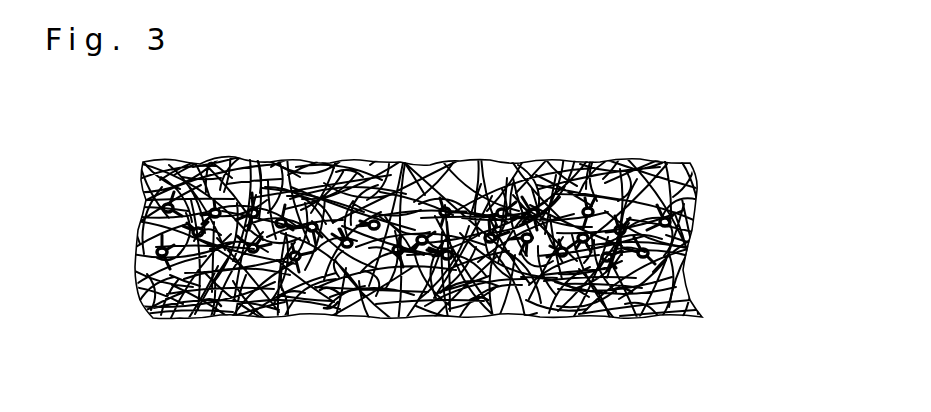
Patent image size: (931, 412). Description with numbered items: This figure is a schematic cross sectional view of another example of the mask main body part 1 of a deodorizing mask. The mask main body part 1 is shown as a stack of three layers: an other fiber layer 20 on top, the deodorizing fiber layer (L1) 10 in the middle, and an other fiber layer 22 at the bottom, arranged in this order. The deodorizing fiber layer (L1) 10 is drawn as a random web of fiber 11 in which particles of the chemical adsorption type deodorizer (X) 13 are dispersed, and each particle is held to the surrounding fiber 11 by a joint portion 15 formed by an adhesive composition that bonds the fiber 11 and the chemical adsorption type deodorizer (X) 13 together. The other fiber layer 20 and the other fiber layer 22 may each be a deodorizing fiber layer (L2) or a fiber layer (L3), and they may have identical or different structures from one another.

The mask main body part 1 is at (643, 125).
The deodorizing fiber layer (L1) 10 is at (723, 212).
The fiber 11 is at (192, 317).
The chemical adsorption type deodorizer (X) 13 is at (395, 318).
The joint portion 15 is at (333, 300).
The other fiber layer 20 is at (723, 160).
The other fiber layer 22 is at (723, 267).